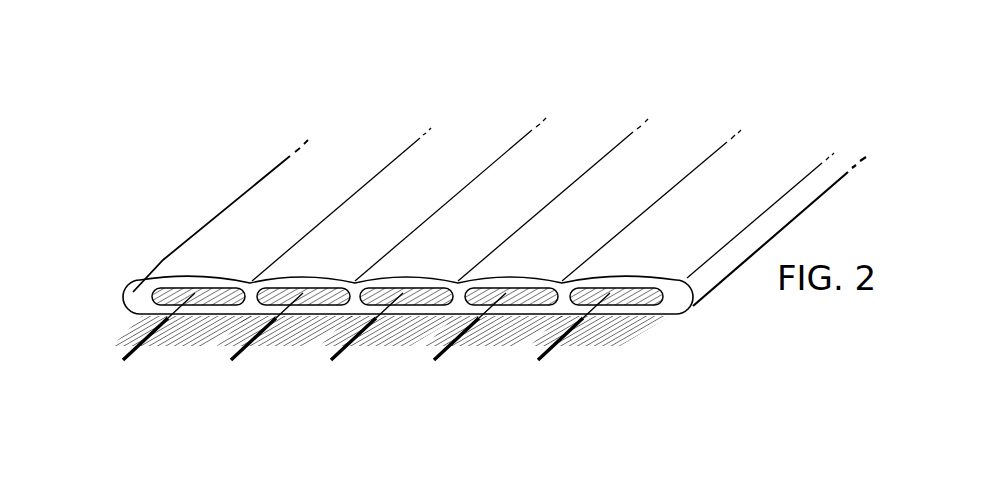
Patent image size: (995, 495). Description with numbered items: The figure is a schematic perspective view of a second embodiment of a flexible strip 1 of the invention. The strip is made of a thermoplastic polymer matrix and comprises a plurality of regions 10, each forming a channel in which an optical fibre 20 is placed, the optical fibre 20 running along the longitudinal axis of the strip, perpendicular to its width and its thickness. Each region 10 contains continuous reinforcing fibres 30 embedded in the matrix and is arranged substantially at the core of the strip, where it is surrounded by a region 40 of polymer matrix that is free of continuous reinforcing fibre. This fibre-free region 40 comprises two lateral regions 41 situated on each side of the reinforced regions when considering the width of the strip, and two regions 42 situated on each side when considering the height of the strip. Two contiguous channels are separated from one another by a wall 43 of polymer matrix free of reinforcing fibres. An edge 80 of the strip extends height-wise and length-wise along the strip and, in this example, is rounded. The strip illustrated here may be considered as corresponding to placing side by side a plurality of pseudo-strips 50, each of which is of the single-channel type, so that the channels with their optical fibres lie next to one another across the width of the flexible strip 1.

The flexible strip 1 is at (578, 139).
The region forming a channel 10 is at (231, 316).
The optical fibre 20 is at (229, 359).
The continuous reinforcing fibres 30 is at (405, 338).
The region of polymer matrix free of continuous reinforcing fibre 40 is at (694, 311).
The lateral regions 41 is at (140, 296).
The regions situated on each side in height 42 is at (252, 281).
The wall 43 is at (562, 300).
The pseudo-strips 50 is at (570, 235).
The edge 80 is at (715, 275).